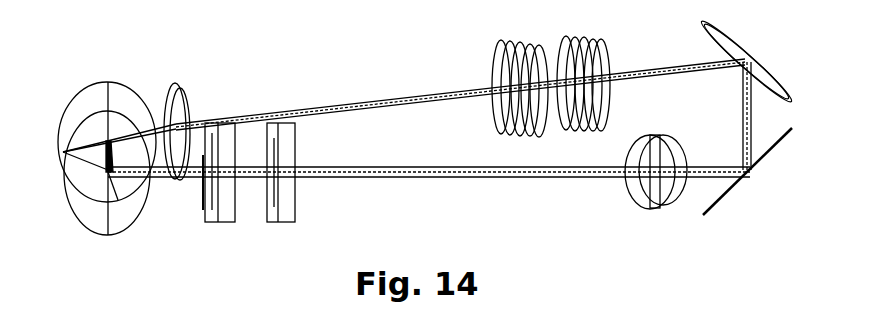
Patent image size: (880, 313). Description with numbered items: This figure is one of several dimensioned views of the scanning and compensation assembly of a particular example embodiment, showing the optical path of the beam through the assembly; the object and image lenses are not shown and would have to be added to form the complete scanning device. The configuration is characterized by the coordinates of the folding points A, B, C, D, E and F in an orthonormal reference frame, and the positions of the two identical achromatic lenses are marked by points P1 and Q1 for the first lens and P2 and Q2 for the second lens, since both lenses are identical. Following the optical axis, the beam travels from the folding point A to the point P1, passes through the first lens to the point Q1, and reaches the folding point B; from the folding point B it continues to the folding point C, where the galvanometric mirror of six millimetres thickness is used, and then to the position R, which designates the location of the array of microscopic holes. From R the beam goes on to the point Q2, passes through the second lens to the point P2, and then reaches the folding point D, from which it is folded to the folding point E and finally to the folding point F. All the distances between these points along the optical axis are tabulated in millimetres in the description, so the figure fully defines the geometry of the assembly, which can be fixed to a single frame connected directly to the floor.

The folding point B is at (404, 158).
The folding point C is at (404, 105).
The position of the array of microscopic holes R is at (179, 119).
The point Q1 of lens L1 Q1 is at (212, 172).
The point P1 of lens L1 P1 is at (302, 172).
The point Q2 of lens L2 Q2 is at (500, 88).
The point P2 of lens L2 P2 is at (594, 79).
The folding point D is at (746, 93).
The folding point E is at (747, 171).
The folding point A is at (650, 174).
The folding point F is at (663, 169).